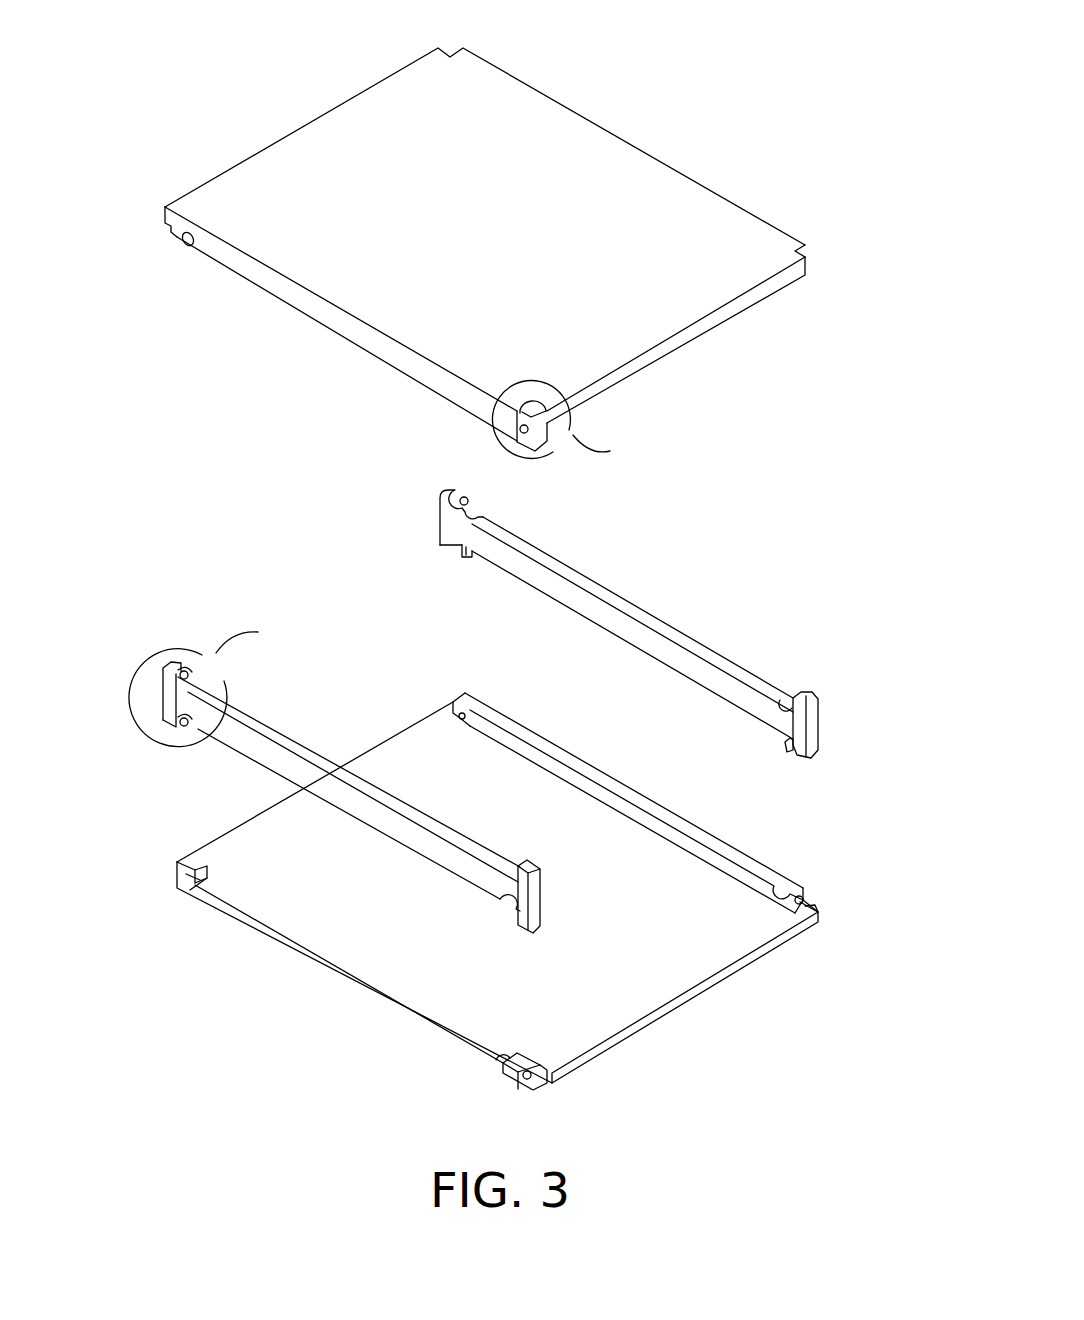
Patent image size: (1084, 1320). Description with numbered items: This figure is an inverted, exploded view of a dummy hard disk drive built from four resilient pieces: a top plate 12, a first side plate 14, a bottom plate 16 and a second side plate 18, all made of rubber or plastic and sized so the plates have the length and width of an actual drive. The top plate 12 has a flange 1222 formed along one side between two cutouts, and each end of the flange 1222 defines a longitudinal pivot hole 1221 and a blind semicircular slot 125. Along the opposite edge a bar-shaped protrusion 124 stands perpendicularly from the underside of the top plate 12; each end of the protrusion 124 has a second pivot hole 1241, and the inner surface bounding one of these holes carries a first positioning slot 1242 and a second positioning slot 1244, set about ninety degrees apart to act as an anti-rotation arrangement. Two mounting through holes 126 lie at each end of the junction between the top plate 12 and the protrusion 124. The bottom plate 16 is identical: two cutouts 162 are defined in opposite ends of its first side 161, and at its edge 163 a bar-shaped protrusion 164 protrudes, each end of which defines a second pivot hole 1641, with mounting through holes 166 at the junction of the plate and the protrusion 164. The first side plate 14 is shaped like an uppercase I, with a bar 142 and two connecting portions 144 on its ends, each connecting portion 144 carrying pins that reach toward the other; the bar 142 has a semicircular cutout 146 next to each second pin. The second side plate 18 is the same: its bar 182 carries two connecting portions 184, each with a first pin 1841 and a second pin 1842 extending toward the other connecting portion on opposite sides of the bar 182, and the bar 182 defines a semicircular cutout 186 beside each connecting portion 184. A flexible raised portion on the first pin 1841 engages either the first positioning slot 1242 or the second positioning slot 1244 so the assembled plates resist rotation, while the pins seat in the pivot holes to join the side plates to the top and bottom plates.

The top plate 12 is at (507, 913).
The longitudinal pivot hole 1221 is at (527, 1086).
The flange 1222 is at (298, 954).
The bar-shaped protrusion 124 is at (680, 830).
The second pivot hole 1241 is at (820, 914).
The first positioning slot 1242 is at (818, 935).
The second positioning slot 1244 is at (832, 873).
The blind semicircular slot 125 is at (192, 885).
The mounting through hole 126 is at (468, 708).
The first side plate 14 is at (360, 877).
The bar 142 is at (255, 752).
The connecting portion 144 is at (172, 672).
The semicircular cutout 146 is at (505, 907).
The bottom plate 16 is at (496, 280).
The first side 161 is at (678, 192).
The cutout 162 is at (810, 254).
The edge 163 is at (312, 283).
The bar-shaped protrusion 164 is at (380, 340).
The second pivot hole 1641 is at (524, 445).
The mounting through hole 166 is at (189, 242).
The second side plate 18 is at (624, 624).
The bar 182 is at (670, 652).
The connecting portion 184 is at (442, 519).
The first pin 1841 is at (462, 554).
The second pin 1842 is at (796, 694).
The semicircular cutout 186 is at (786, 712).